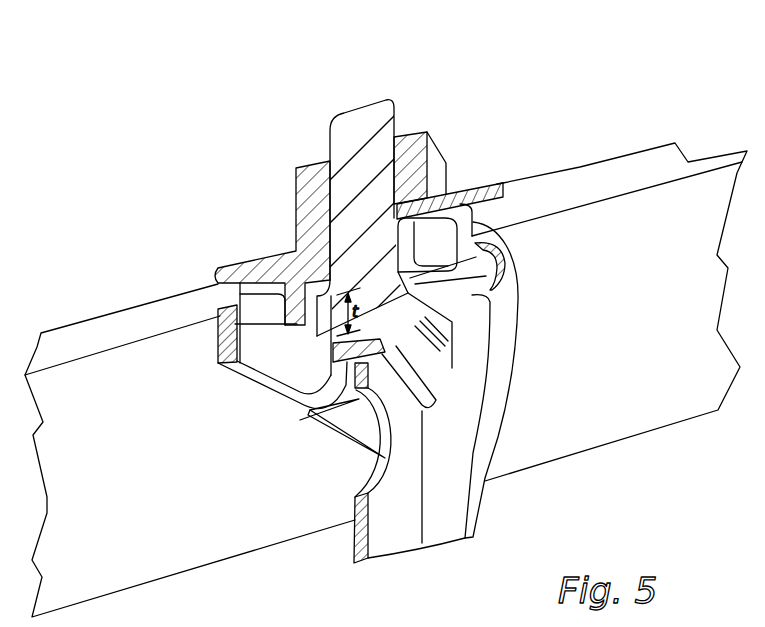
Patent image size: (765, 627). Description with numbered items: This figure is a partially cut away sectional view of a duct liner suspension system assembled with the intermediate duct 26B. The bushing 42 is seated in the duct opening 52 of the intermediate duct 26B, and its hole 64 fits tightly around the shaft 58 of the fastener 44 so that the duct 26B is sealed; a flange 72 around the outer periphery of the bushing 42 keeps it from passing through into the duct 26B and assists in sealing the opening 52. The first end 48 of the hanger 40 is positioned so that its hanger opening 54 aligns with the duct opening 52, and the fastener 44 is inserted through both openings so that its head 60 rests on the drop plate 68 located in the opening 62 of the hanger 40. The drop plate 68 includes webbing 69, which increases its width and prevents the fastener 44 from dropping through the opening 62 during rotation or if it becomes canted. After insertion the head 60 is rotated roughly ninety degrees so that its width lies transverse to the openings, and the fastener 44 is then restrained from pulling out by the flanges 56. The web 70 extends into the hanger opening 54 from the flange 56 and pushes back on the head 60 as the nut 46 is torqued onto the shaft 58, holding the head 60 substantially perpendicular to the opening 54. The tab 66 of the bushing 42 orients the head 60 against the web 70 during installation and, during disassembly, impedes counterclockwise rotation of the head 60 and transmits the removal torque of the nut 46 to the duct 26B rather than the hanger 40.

The intermediate duct 26B is at (90, 333).
The hanger 40 is at (400, 562).
The bushing 42 is at (463, 192).
The fastener 44 is at (326, 121).
The nut 46 is at (410, 160).
The first end 48 is at (534, 288).
The duct opening 52 is at (282, 296).
The hanger opening 54 is at (217, 308).
The flange 56 is at (250, 380).
The shaft 58 is at (362, 107).
The head 60 is at (427, 360).
The opening 62 is at (450, 382).
The hole 64 is at (420, 246).
The tab 66 is at (237, 318).
The drop plate 68 is at (383, 437).
The webbing 69 is at (345, 382).
The web 70 is at (465, 298).
The flange 72 is at (503, 182).